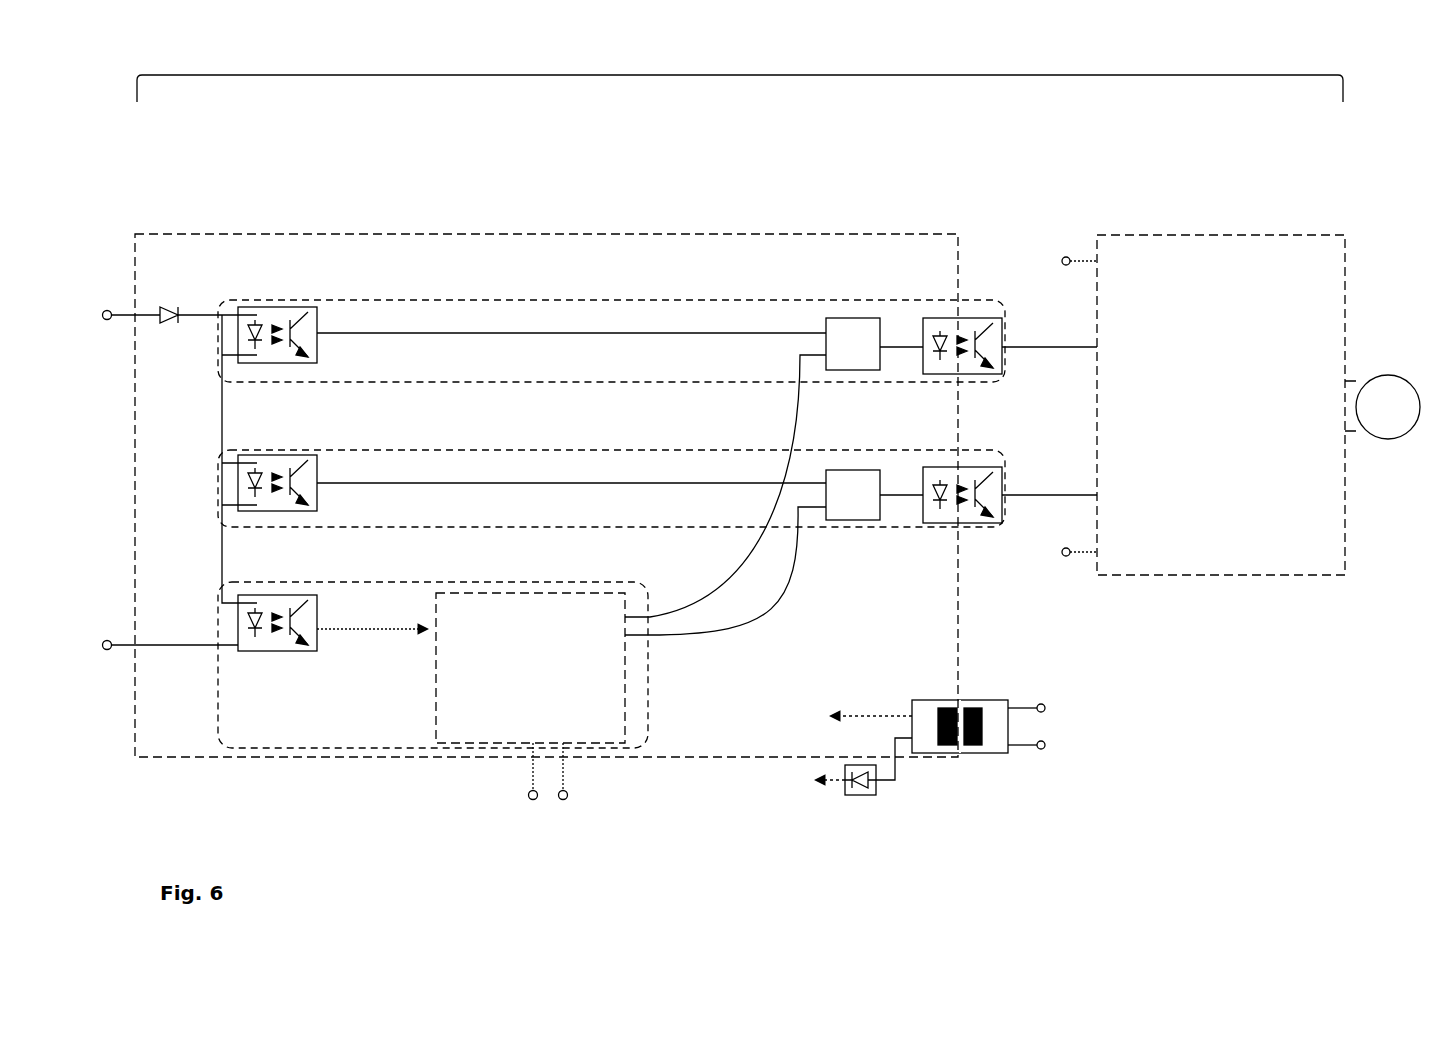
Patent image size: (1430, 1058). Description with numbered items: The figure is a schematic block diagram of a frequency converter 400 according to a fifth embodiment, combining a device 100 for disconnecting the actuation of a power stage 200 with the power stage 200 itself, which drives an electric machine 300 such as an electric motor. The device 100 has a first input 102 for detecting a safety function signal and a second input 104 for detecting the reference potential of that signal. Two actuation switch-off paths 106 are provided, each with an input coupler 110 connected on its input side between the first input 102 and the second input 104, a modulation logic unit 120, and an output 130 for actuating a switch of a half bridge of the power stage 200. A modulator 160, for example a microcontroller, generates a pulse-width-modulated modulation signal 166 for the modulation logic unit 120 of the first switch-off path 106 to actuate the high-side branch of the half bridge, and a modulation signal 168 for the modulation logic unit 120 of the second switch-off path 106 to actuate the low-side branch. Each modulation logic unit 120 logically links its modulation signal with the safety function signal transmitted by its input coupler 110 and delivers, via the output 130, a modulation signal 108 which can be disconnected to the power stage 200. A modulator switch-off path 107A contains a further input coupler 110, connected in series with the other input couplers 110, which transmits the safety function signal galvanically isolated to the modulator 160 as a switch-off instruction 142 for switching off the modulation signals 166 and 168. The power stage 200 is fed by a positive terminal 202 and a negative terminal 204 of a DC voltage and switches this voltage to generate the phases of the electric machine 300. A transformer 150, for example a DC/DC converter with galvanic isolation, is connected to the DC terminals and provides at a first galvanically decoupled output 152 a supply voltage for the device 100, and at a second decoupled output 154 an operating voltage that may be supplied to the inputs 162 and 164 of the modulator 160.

The frequency converter 400 is at (735, 75).
The device for disconnecting the actuation of a power stage 100 is at (381, 234).
The first input 102 is at (107, 310).
The second input 104 is at (108, 652).
The actuation switch-off path 106 is at (541, 450).
The modulator switch-off path 107A is at (610, 582).
The modulation signal which can be disconnected 108 is at (1013, 347).
The input coupler 110 is at (295, 690).
The modulation logic unit 120 is at (892, 550).
The output 130 is at (1000, 550).
The switch-off instruction 142 is at (400, 622).
The transformer 150 is at (980, 756).
The first galvanically decoupled output 152 is at (870, 718).
The second decoupled output 154 is at (832, 785).
The modulator 160 is at (467, 758).
The input of the modulator 162 is at (530, 768).
The input of the modulator 164 is at (566, 768).
The modulation signal 166 is at (813, 355).
The modulation signal 168 is at (818, 520).
The power stage 200 is at (1185, 235).
The positive terminal 202 is at (1044, 705).
The negative terminal 204 is at (1057, 790).
The electric machine 300 is at (1382, 375).